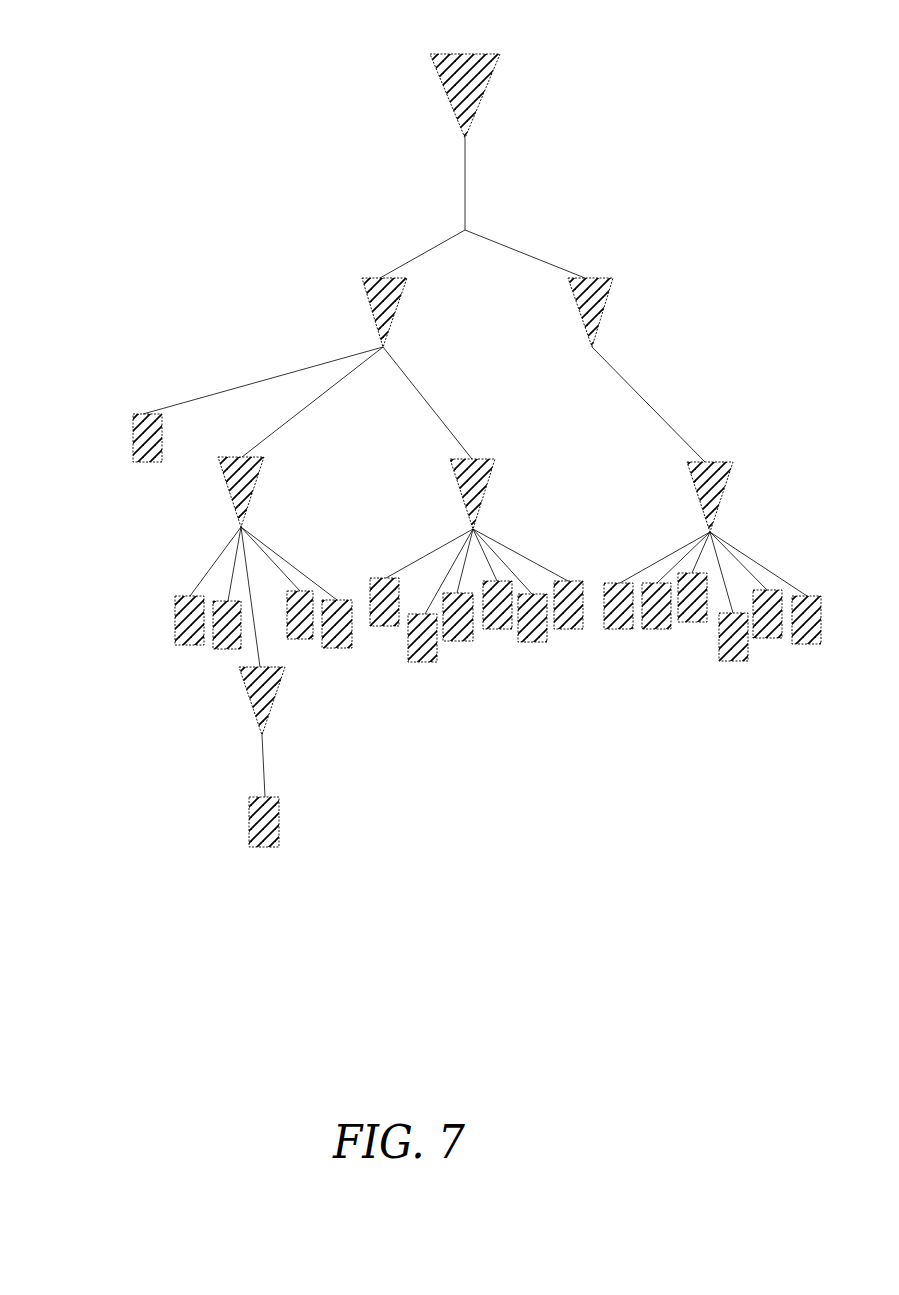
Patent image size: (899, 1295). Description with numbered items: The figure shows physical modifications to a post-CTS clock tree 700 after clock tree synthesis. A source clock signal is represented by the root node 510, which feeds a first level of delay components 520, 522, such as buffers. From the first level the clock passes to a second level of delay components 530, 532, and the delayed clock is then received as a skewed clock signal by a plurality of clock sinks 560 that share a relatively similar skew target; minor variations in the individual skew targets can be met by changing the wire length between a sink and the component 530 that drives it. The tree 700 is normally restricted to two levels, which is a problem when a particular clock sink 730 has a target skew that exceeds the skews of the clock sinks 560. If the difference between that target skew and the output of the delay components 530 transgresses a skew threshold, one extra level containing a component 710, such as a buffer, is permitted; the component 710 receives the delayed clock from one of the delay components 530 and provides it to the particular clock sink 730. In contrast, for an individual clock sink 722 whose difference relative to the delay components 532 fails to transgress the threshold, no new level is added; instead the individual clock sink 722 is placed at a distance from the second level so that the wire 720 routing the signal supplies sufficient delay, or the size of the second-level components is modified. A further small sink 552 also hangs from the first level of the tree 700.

The post-CTS clock tree 700 is at (128, 60).
The root node 510 is at (445, 72).
The first level delay component 520 is at (378, 297).
The first level delay component 522 is at (580, 297).
The second level delay component 530 is at (236, 470).
The second level delay component 532 is at (462, 478).
The leaf node 552 is at (140, 424).
The clock sinks 560 is at (182, 606).
The component 710 is at (256, 678).
The wire 720 is at (738, 561).
The individual clock sink 722 is at (725, 648).
The particular clock sink 730 is at (258, 828).